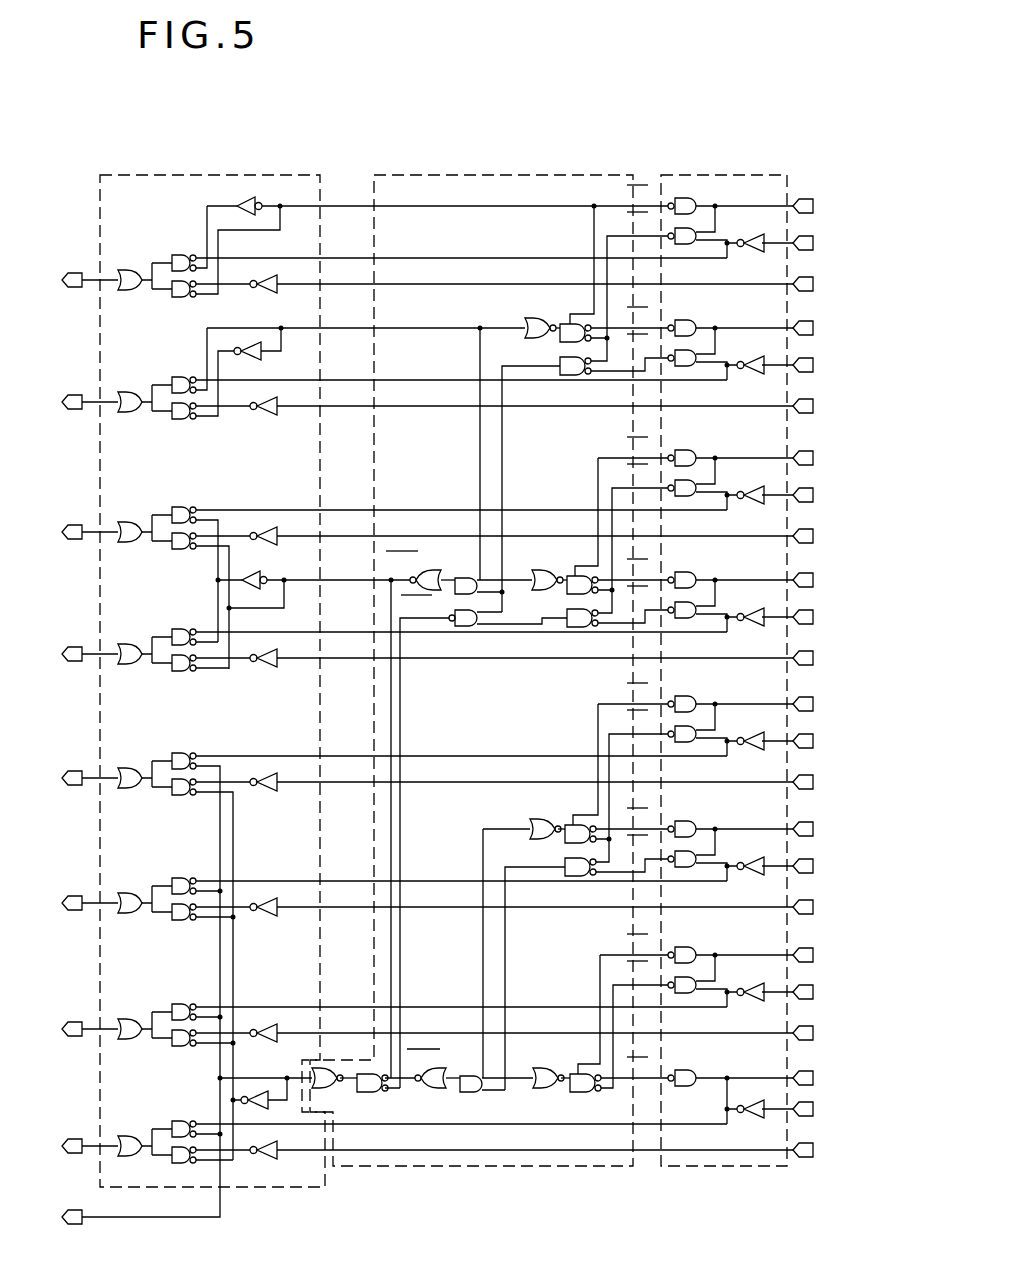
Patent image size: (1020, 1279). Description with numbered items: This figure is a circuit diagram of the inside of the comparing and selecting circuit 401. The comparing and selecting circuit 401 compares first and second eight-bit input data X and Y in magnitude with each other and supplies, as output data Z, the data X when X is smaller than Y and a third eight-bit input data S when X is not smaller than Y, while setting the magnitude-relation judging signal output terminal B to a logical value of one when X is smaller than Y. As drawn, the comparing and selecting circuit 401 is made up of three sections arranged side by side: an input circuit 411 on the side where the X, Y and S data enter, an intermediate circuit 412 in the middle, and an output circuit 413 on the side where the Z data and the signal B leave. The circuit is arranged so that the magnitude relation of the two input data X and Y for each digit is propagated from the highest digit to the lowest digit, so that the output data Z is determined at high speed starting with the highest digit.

The comparing and selecting circuit 401 is at (665, 1259).
The input circuit 411 is at (705, 1168).
The intermediate circuit 412 is at (477, 1168).
The output circuit 413 is at (290, 1188).